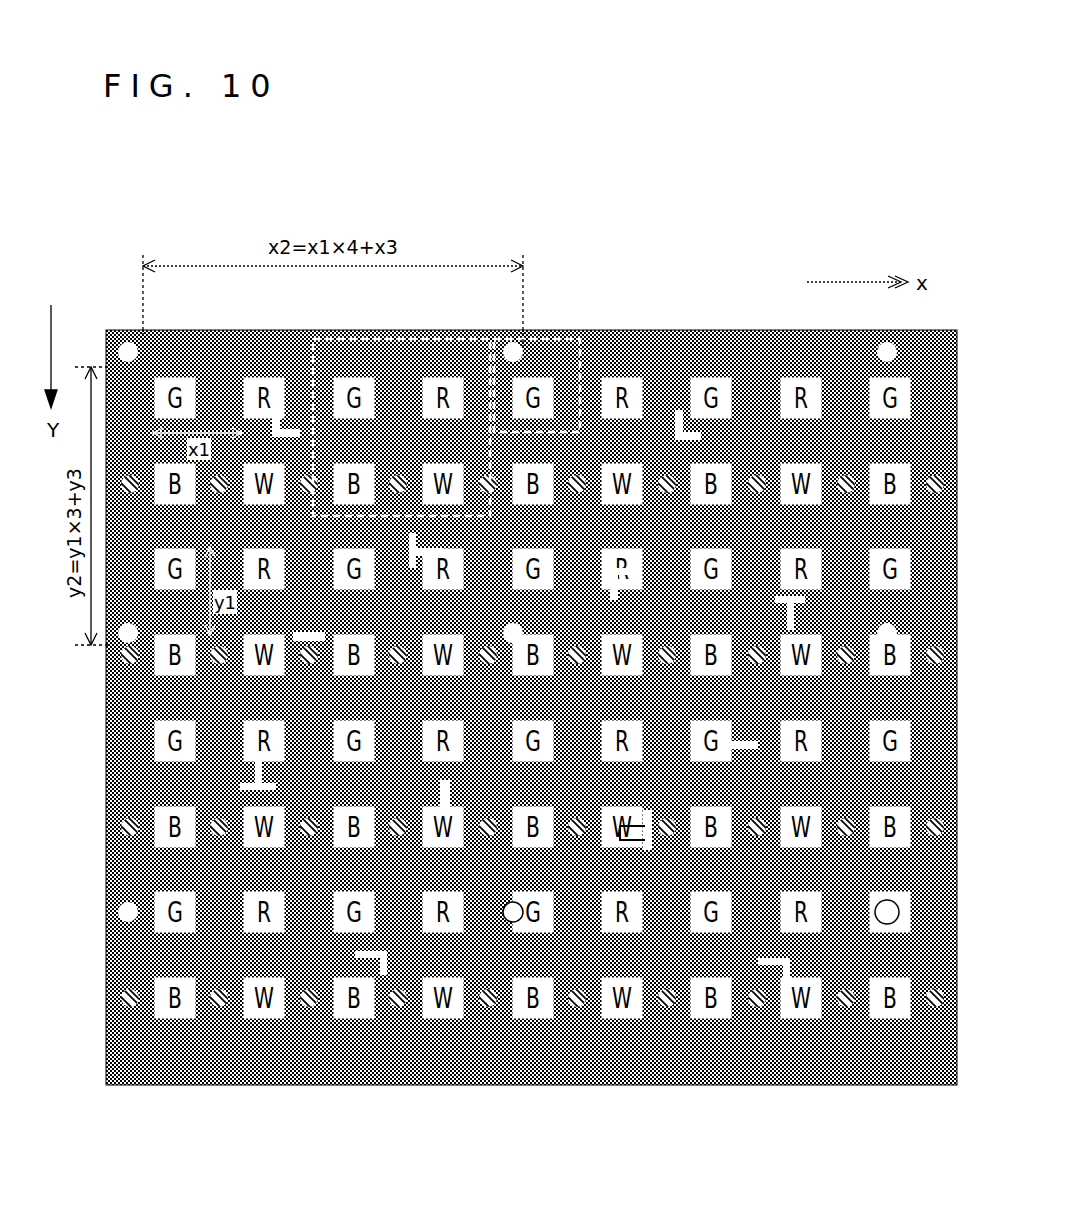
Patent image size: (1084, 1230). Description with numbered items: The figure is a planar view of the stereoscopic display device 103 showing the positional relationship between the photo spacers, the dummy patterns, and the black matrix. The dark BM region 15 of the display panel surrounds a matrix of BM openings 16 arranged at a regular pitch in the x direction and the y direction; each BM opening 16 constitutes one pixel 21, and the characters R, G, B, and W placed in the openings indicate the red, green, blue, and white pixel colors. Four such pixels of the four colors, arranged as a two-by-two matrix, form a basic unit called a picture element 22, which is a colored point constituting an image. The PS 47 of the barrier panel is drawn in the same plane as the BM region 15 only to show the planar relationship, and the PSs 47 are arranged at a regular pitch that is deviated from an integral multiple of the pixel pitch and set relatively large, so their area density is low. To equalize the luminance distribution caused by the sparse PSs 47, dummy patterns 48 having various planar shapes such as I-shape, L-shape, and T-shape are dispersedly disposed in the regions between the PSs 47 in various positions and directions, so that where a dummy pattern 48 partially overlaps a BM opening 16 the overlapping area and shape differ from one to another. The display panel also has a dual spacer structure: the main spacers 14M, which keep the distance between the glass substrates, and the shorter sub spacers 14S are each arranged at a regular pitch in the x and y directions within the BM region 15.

The stereoscopic display device 103 is at (607, 226).
The BM region 15 is at (622, 352).
The BM opening 16 is at (712, 384).
The PS 47 is at (125, 342).
The dummy pattern 48 is at (452, 791).
The pixel 21 is at (499, 332).
The picture element 22 is at (383, 332).
The main spacer 14M is at (131, 1006).
The sub spacer 14S is at (755, 1008).